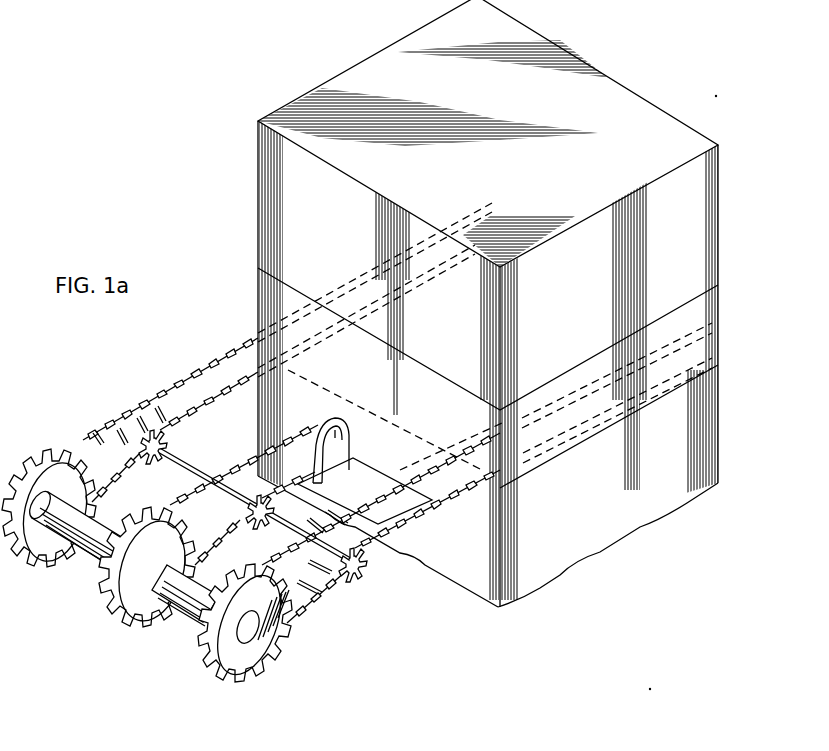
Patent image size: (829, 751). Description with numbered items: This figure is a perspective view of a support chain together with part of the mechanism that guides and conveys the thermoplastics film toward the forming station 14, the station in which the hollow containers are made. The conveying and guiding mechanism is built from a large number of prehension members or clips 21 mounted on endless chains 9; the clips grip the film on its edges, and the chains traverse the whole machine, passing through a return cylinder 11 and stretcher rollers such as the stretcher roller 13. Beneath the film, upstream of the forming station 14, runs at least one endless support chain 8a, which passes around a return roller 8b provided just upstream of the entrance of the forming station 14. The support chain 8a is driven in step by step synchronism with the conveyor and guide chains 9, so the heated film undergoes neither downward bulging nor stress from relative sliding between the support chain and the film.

The forming station 14 is at (612, 88).
The endless chains 9 is at (166, 390).
The endless support chain 8a is at (232, 393).
The return roller 8b is at (348, 424).
The clips 21 is at (100, 440).
The stretcher roller 13 is at (356, 582).
The return cylinder 11 is at (266, 626).